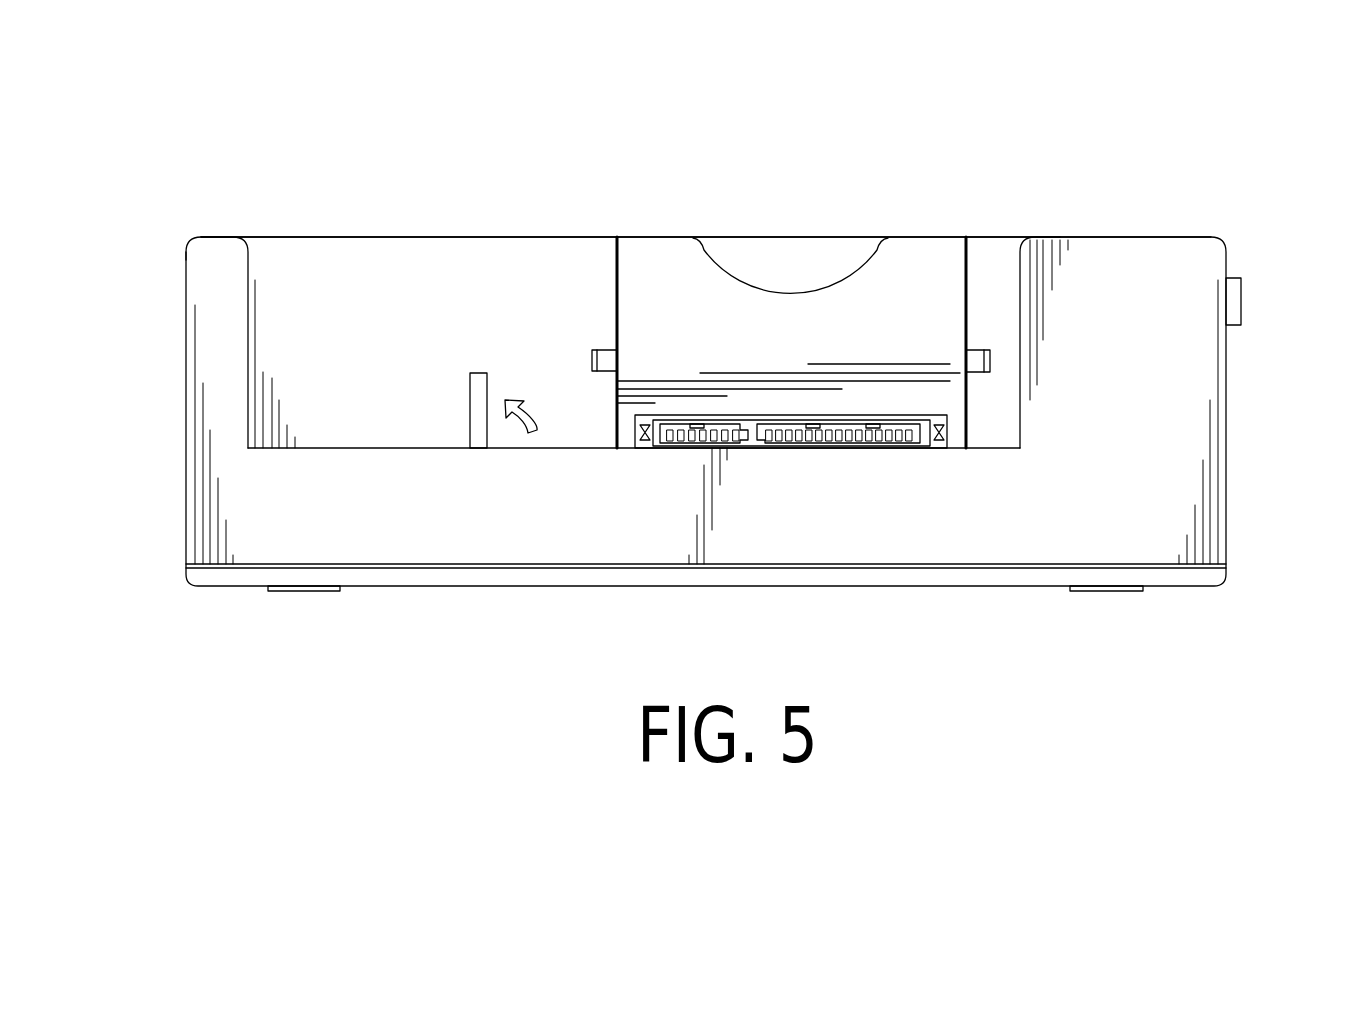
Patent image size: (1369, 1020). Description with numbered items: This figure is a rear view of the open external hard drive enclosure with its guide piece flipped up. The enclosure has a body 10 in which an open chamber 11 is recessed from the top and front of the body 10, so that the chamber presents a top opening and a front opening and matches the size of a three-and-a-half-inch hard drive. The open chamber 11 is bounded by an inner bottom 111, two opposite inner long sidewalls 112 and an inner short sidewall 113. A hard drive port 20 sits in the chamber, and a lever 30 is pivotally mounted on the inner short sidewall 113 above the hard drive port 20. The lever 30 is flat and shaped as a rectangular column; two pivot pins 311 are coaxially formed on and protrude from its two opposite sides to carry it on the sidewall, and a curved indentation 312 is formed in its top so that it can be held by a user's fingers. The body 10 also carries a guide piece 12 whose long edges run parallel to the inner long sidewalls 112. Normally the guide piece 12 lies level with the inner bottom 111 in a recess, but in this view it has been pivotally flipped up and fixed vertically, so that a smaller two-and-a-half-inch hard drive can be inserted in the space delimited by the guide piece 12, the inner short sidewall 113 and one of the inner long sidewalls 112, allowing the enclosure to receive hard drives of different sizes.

The body 10 is at (1216, 237).
The open chamber 11 is at (258, 347).
The inner bottom 111 is at (362, 446).
The inner long sidewalls 112 is at (1012, 414).
The inner short sidewall 113 is at (423, 275).
The guide piece 12 is at (478, 380).
The hard drive port 20 is at (795, 418).
The lever 30 is at (825, 276).
The pivot pins 311 is at (608, 357).
The curved indentation 312 is at (785, 263).